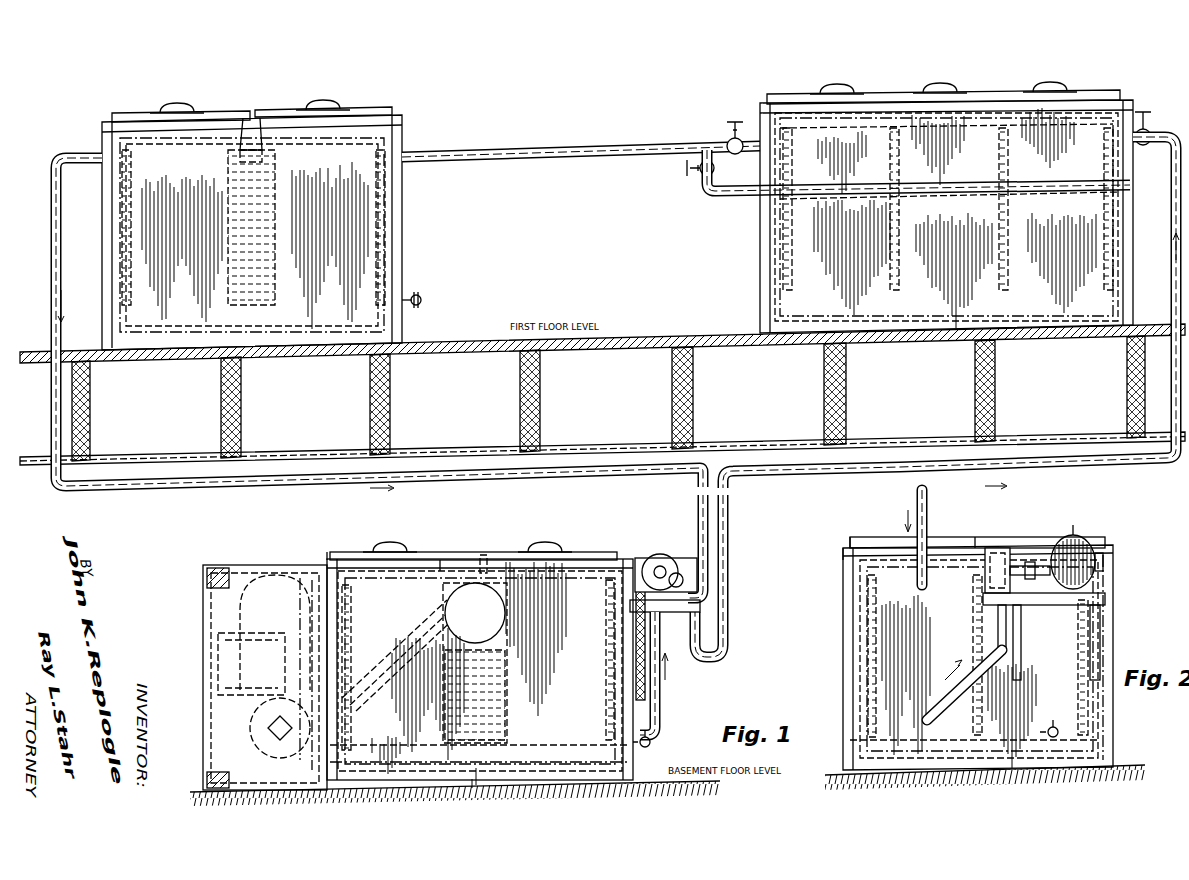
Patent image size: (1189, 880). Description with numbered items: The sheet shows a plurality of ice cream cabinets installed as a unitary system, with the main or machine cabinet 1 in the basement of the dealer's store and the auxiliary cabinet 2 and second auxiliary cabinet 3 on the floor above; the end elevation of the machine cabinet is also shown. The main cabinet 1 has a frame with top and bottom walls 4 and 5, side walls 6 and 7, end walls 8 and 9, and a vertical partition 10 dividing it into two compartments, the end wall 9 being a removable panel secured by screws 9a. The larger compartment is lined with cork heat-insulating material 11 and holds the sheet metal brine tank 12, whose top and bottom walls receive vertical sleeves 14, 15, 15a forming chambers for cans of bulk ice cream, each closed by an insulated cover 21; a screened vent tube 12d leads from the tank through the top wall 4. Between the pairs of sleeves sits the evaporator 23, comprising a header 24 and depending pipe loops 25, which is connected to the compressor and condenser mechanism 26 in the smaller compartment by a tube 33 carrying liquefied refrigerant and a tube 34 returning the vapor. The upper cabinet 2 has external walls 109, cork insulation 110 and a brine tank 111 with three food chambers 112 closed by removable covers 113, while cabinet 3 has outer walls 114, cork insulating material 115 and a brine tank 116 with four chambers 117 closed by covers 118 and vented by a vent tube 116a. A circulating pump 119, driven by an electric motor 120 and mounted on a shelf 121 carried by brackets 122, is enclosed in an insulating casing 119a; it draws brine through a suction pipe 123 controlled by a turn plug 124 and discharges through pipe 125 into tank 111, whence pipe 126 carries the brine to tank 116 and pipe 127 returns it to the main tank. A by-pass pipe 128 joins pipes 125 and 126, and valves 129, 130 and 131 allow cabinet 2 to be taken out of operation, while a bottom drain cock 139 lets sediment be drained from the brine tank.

In FIG. 1, the main or machine cabinet 1 is at (330, 551).
In FIG. 2, the main or machine cabinet 1 is at (860, 535).
In FIG. 1, the auxiliary ice cream cabinet 2 is at (1116, 86).
In FIG. 1, the second auxiliary cabinet 3 is at (405, 113).
In FIG. 1, the top wall 4 is at (230, 565).
In FIG. 2, the top wall 4 is at (842, 550).
In FIG. 1, the bottom wall 5 is at (455, 794).
In FIG. 1, the side wall 6 is at (452, 565).
In FIG. 2, the side wall 6 is at (842, 606).
In FIG. 2, the side wall 7 is at (1114, 620).
In FIG. 1, the end wall 8 is at (660, 705).
In FIG. 2, the end wall 8 is at (858, 672).
In FIG. 1, the end wall 9 is at (203, 626).
In FIG. 1, the screws 9a is at (208, 780).
In FIG. 1, the vertical partition 10 is at (300, 580).
In FIG. 1, the heat-insulating material 11 is at (332, 722).
In FIG. 2, the heat-insulating material 11 is at (860, 737).
In FIG. 1, the brine tank 12 is at (330, 575).
In FIG. 2, the brine tank 12 is at (866, 700).
In FIG. 1, the vent tube 12d is at (484, 556).
In FIG. 1, the vertical sleeve 14 is at (352, 626).
In FIG. 1, the vertical sleeve 15 is at (604, 620).
In FIG. 2, the vertical sleeve 15 is at (868, 640).
In FIG. 2, the vertical sleeve 15a is at (1090, 695).
In FIG. 1, the cover 21 is at (418, 550).
In FIG. 2, the cover 21 is at (950, 536).
In FIG. 1, the evaporator 23 is at (442, 598).
In FIG. 1, the header 24 is at (506, 603).
In FIG. 1, the pipe loops 25 is at (446, 660).
In FIG. 1, the compressor and condenser mechanism 26 is at (240, 620).
In FIG. 1, the tube 33 is at (403, 664).
In FIG. 1, the tube 34 is at (392, 666).
In FIG. 1, the external walls 109 is at (770, 226).
In FIG. 1, the cork insulation material 110 is at (776, 250).
In FIG. 1, the brine tank 111 is at (784, 265).
In FIG. 1, the food chambers 112 is at (890, 244).
In FIG. 1, the removable covers 113 is at (800, 92).
In FIG. 1, the outer walls 114 is at (120, 250).
In FIG. 1, the cork insulating material 115 is at (124, 280).
In FIG. 1, the brine tank 116 is at (386, 266).
In FIG. 1, the vent tube 116a is at (250, 120).
In FIG. 1, the chambers 117 is at (228, 268).
In FIG. 1, the removable covers 118 is at (135, 112).
In FIG. 1, the circulating pump 119 is at (656, 556).
In FIG. 2, the circulating pump 119 is at (998, 546).
In FIG. 1, the casing 119a is at (730, 548).
In FIG. 2, the casing 119a is at (1012, 548).
In FIG. 1, the electric motor 120 is at (678, 574).
In FIG. 2, the electric motor 120 is at (1078, 536).
In FIG. 1, the shelf 121 is at (630, 606).
In FIG. 2, the shelf 121 is at (1048, 606).
In FIG. 1, the brackets 122 is at (702, 653).
In FIG. 2, the brackets 122 is at (1022, 660).
In FIG. 1, the pipe 123 is at (660, 727).
In FIG. 2, the pipe 123 is at (970, 668).
In FIG. 1, the turn plug 124 is at (636, 700).
In FIG. 1, the pipe 125 is at (884, 472).
In FIG. 2, the pipe 125 is at (1008, 636).
In FIG. 1, the pipe 126 is at (566, 146).
In FIG. 1, the pipe 127 is at (52, 210).
In FIG. 2, the pipe 127 is at (928, 489).
In FIG. 1, the pipe 128 is at (930, 197).
In FIG. 1, the valve 129 is at (1148, 112).
In FIG. 1, the valve 130 is at (694, 172).
In FIG. 1, the valve 131 is at (733, 125).
In FIG. 1, the drain cock 139 is at (651, 744).
In FIG. 2, the drain cock 139 is at (1050, 728).